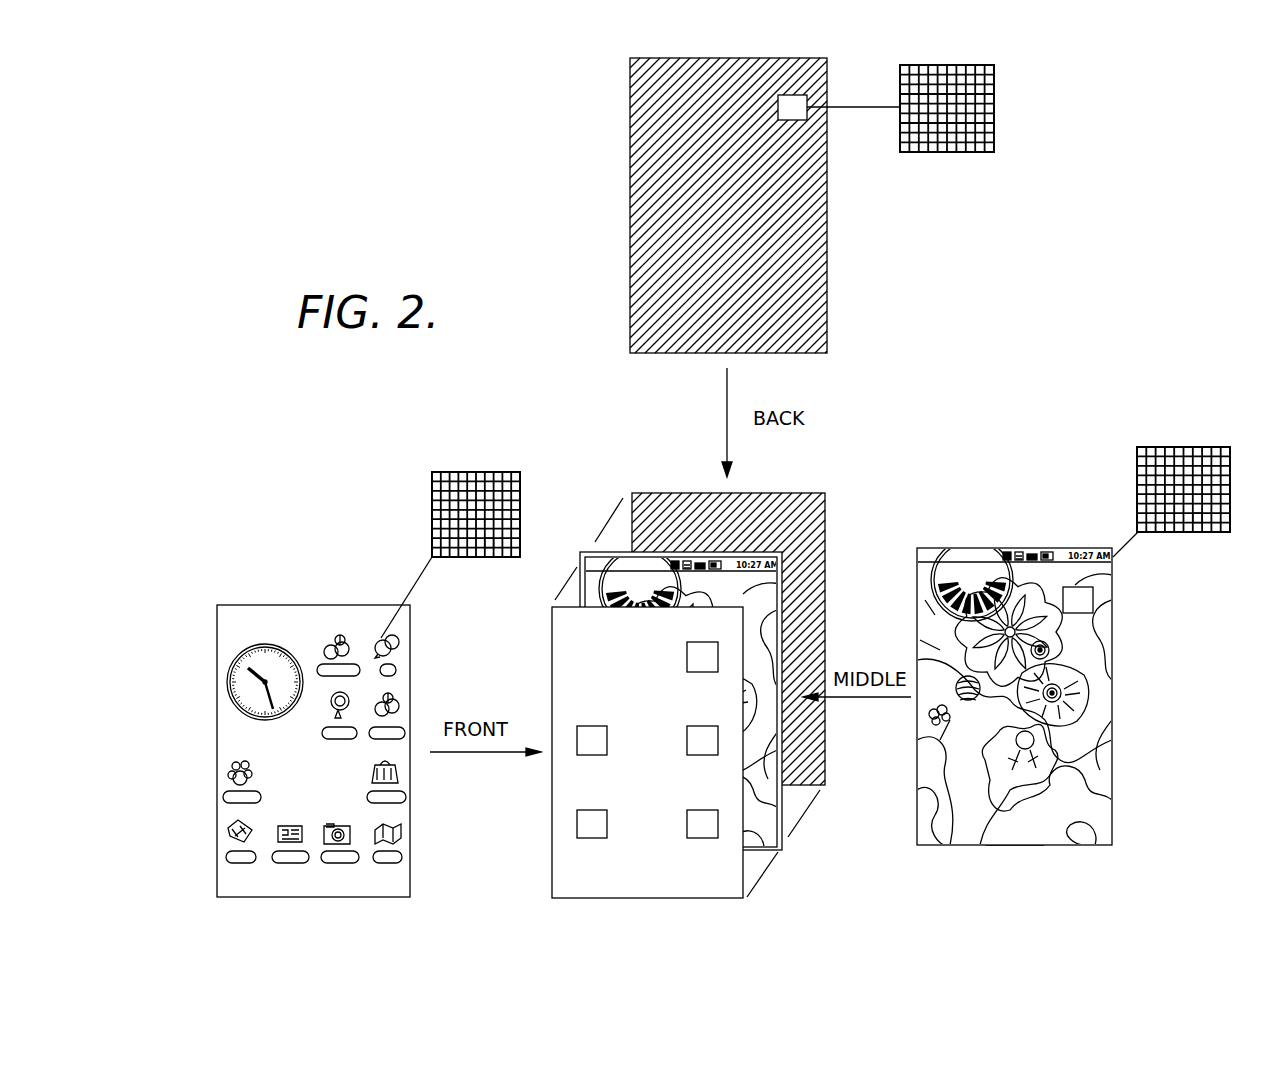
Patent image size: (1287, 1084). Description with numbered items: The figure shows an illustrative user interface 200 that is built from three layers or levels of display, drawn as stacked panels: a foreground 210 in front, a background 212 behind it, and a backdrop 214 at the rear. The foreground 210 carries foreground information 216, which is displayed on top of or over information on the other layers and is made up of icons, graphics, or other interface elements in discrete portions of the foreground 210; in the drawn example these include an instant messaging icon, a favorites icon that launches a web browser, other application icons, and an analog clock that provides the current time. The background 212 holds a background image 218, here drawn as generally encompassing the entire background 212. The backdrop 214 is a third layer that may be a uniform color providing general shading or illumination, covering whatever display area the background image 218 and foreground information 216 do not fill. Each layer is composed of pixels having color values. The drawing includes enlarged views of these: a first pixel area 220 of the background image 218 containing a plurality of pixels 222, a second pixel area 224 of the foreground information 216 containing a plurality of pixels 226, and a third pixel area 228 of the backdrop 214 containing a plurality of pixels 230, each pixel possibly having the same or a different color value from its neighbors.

The user interface 200 is at (822, 893).
The foreground 210 is at (552, 842).
The background 212 is at (783, 850).
The backdrop 214 is at (631, 200).
The foreground information 216 is at (577, 821).
The background image 218 is at (1097, 634).
The first pixel area 220 is at (1210, 447).
The pixel 222 is at (1197, 518).
The second pixel area 224 is at (480, 472).
The pixel 226 is at (482, 543).
The third pixel area 228 is at (795, 120).
The pixel 230 is at (994, 98).